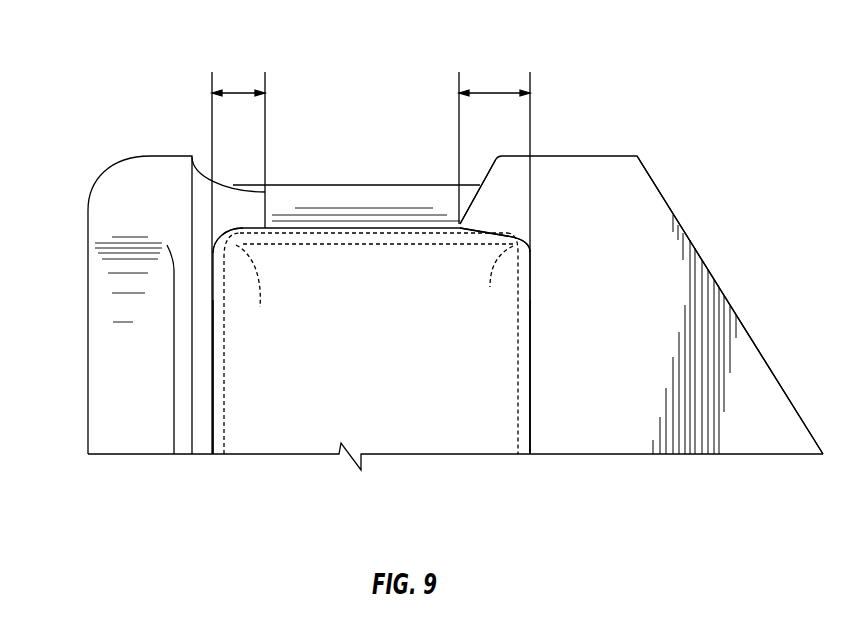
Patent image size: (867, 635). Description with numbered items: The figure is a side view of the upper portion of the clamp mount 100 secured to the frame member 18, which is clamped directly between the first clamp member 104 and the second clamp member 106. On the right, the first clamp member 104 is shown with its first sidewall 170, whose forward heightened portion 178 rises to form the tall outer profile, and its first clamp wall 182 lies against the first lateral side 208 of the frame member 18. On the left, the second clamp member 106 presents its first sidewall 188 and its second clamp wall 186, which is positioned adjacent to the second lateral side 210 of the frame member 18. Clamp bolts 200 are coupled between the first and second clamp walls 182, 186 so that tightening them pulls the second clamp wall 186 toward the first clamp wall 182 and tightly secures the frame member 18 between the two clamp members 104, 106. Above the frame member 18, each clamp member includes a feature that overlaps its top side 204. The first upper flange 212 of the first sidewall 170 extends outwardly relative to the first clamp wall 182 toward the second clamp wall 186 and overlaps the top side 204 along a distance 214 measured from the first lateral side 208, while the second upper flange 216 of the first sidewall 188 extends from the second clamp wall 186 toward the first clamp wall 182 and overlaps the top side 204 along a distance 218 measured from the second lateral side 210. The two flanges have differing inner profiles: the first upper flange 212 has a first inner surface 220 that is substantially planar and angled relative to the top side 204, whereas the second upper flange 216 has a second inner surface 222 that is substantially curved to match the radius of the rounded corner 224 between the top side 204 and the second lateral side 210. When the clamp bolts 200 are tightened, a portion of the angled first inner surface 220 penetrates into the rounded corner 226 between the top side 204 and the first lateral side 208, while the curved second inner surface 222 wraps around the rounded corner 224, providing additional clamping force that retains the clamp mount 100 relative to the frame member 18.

The clamp mount 100 is at (673, 108).
The first clamp member 104 is at (720, 255).
The second clamp member 106 is at (70, 232).
The first sidewall 170 is at (717, 352).
The forward heightened portion 178 is at (747, 392).
The first clamp wall 182 is at (530, 400).
The second clamp wall 186 is at (213, 417).
The first sidewall 188 is at (118, 383).
The frame member 18 is at (330, 417).
The clamp bolts 200 is at (328, 198).
The top side 204 is at (363, 233).
The first lateral side 208 is at (530, 353).
The second lateral side 210 is at (217, 368).
The first upper flange 212 is at (500, 205).
The distance 214 is at (488, 92).
The second upper flange 216 is at (228, 200).
The distance 218 is at (235, 90).
The first inner surface 220 is at (480, 232).
The second inner surface 222 is at (243, 237).
The rounded corner 224 is at (257, 290).
The rounded corner 226 is at (495, 282).